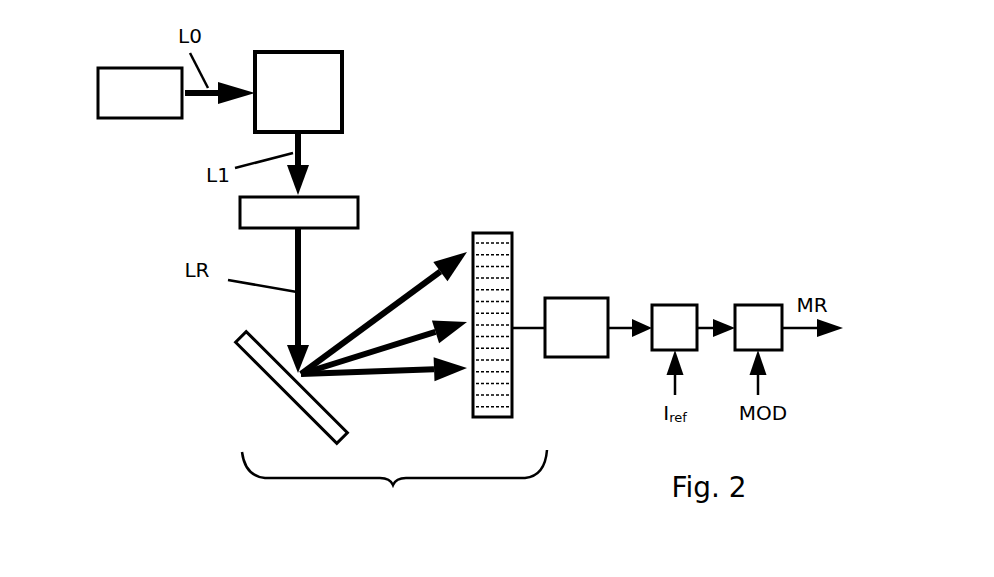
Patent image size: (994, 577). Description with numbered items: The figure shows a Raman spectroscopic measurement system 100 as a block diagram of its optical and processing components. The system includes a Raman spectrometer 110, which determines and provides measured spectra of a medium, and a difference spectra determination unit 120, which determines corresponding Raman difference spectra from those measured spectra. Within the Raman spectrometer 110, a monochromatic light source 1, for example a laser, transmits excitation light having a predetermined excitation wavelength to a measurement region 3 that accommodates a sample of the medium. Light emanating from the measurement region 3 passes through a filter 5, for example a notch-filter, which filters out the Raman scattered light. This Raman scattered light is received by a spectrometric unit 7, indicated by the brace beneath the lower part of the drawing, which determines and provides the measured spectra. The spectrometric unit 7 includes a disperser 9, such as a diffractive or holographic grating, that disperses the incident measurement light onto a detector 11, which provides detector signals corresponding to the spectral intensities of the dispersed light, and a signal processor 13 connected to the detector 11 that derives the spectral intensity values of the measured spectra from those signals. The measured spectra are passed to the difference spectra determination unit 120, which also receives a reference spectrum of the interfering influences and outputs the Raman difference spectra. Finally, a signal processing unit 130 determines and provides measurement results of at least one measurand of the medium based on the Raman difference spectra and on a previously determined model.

The monochromatic light source 1 is at (140, 93).
The measurement region 3 is at (297, 52).
The filter 5 is at (327, 210).
The spectrometric unit 7 is at (394, 485).
The disperser 9 is at (303, 390).
The detector 11 is at (490, 363).
The signal processor 13 is at (570, 343).
The Raman spectroscopic measurement system 100 is at (726, 136).
The Raman spectrometer 110 is at (516, 201).
The difference spectra determination unit 120 is at (663, 302).
The signal processing unit 130 is at (747, 302).